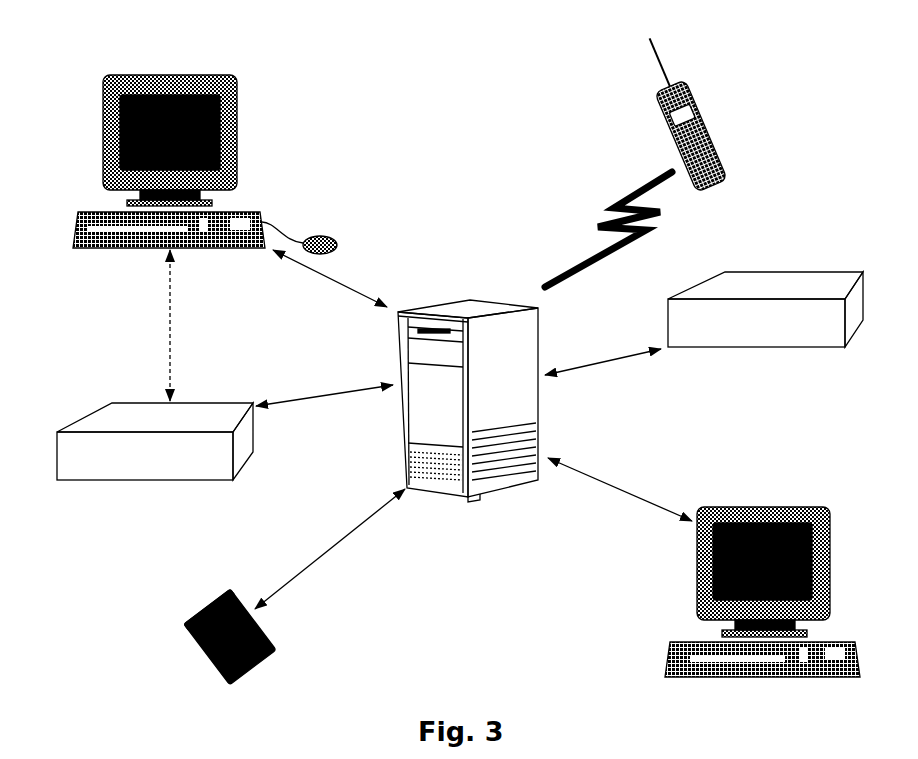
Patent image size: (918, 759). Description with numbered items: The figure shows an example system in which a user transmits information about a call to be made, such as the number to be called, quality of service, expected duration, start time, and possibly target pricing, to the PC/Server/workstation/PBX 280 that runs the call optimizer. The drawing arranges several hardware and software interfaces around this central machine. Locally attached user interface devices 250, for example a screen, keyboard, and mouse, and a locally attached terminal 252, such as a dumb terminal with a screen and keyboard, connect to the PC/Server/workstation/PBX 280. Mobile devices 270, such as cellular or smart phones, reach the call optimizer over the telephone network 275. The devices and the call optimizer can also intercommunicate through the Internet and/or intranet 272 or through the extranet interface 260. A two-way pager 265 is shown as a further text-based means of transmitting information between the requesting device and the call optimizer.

The user interface devices 250 is at (240, 122).
The terminal 252 is at (790, 507).
The extranet interface 260 is at (100, 410).
The two-way pager 265 is at (195, 612).
The mobile devices 270 is at (714, 122).
The Internet and/or intranet 272 is at (800, 272).
The telephone network 275 is at (600, 226).
The PC/Server/workstation/PBX 280 is at (462, 306).